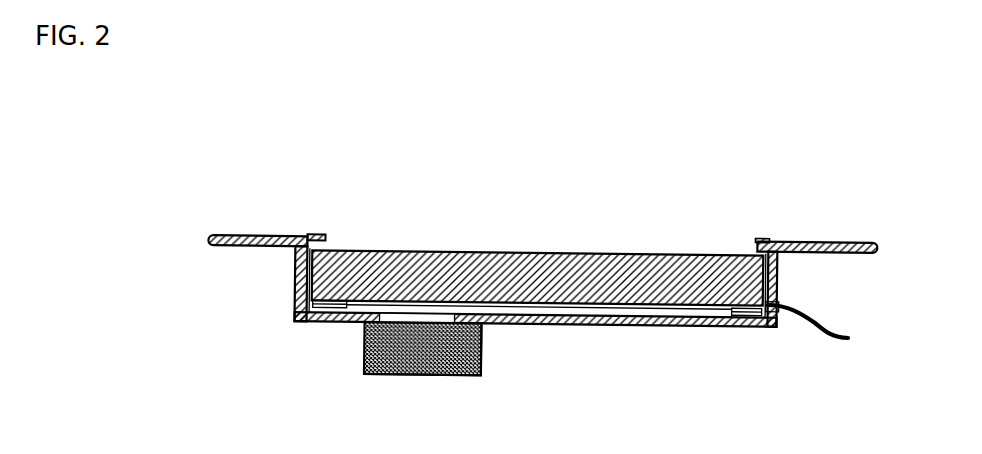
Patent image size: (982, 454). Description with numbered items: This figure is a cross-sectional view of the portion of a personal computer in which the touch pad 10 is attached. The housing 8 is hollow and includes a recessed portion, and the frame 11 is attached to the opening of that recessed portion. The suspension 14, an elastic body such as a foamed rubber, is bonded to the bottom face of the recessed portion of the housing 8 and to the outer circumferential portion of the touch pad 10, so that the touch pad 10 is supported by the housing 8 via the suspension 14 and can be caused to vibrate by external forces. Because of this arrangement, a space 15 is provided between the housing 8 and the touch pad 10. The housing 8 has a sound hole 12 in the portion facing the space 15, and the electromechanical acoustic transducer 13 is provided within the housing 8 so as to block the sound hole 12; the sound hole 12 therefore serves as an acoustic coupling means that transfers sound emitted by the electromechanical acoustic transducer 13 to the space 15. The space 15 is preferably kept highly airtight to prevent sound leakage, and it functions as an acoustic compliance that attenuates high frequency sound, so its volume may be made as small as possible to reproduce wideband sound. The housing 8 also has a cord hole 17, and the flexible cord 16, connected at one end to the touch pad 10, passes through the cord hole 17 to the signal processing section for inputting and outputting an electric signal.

The housing 8 is at (233, 236).
The touch pad 10 is at (518, 252).
The frame 11 is at (322, 234).
The sound hole 12 is at (365, 351).
The electromechanical acoustic transducer 13 is at (482, 373).
The suspension 14 is at (323, 322).
The space 15 is at (627, 308).
The flexible cord 16 is at (835, 343).
The cord hole 17 is at (775, 297).